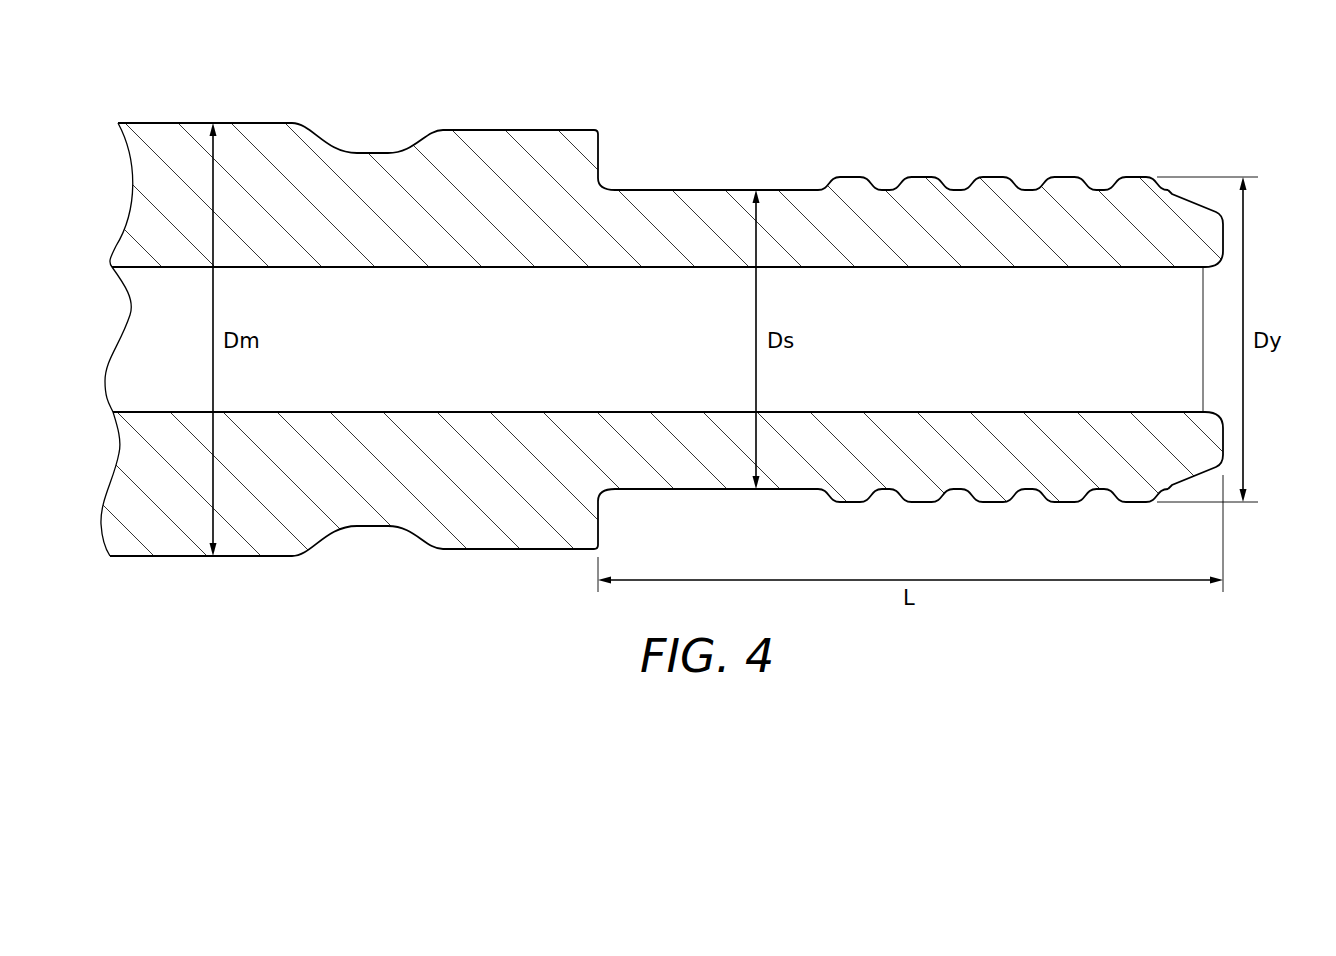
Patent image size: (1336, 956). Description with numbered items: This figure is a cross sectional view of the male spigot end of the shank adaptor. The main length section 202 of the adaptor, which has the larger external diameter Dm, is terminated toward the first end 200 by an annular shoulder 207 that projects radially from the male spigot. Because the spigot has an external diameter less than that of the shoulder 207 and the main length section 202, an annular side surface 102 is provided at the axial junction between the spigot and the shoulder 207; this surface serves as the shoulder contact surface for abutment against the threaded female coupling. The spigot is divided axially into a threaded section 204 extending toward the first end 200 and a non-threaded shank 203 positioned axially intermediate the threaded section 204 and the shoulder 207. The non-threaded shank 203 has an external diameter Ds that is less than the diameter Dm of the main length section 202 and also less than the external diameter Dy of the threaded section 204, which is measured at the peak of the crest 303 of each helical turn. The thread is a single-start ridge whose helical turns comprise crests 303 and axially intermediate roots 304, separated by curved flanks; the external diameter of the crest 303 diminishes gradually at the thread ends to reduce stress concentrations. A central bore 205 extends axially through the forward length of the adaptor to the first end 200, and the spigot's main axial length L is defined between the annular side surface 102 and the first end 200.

The first end 200 is at (1223, 233).
The main length section 202 is at (172, 556).
The non-threaded shank 203 is at (728, 190).
The threaded section 204 is at (1145, 125).
The central bore 205 is at (606, 352).
The annular shoulder 207 is at (519, 130).
The annular side surface 102 is at (600, 146).
The crest 303 is at (992, 177).
The root 304 is at (1030, 191).